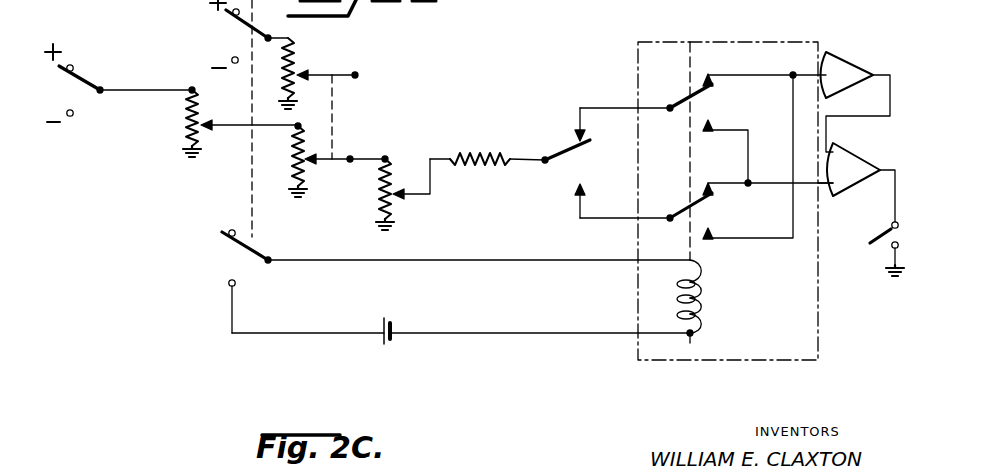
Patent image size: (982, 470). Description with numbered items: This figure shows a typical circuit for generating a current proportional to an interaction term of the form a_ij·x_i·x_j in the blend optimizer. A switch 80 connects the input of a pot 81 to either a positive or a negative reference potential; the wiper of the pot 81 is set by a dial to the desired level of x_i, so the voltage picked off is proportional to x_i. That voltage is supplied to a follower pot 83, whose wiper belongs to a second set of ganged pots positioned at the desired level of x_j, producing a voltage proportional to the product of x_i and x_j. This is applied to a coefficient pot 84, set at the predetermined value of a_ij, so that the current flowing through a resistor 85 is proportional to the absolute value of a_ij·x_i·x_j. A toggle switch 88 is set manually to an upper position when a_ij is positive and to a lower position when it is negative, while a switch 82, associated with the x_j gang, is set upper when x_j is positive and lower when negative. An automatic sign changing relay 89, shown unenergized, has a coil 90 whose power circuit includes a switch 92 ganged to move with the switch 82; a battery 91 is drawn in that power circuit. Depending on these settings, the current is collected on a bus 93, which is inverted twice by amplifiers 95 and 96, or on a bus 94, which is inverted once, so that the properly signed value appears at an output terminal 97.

The switch 80 is at (93, 80).
The pot 81 is at (188, 125).
The switch 82 is at (240, 27).
The follower pot 83 is at (297, 160).
The coefficient pot 84 is at (380, 204).
The resistor 85 is at (480, 156).
The toggle switch 88 is at (556, 153).
The automatic sign changing relay 89 is at (652, 42).
The coil 90 is at (705, 290).
The battery 91 is at (391, 321).
The switch 92 is at (236, 243).
The bus 93 is at (823, 75).
The bus 94 is at (826, 190).
The amplifier 95 is at (862, 67).
The amplifier 96 is at (846, 148).
The output terminal 97 is at (880, 235).